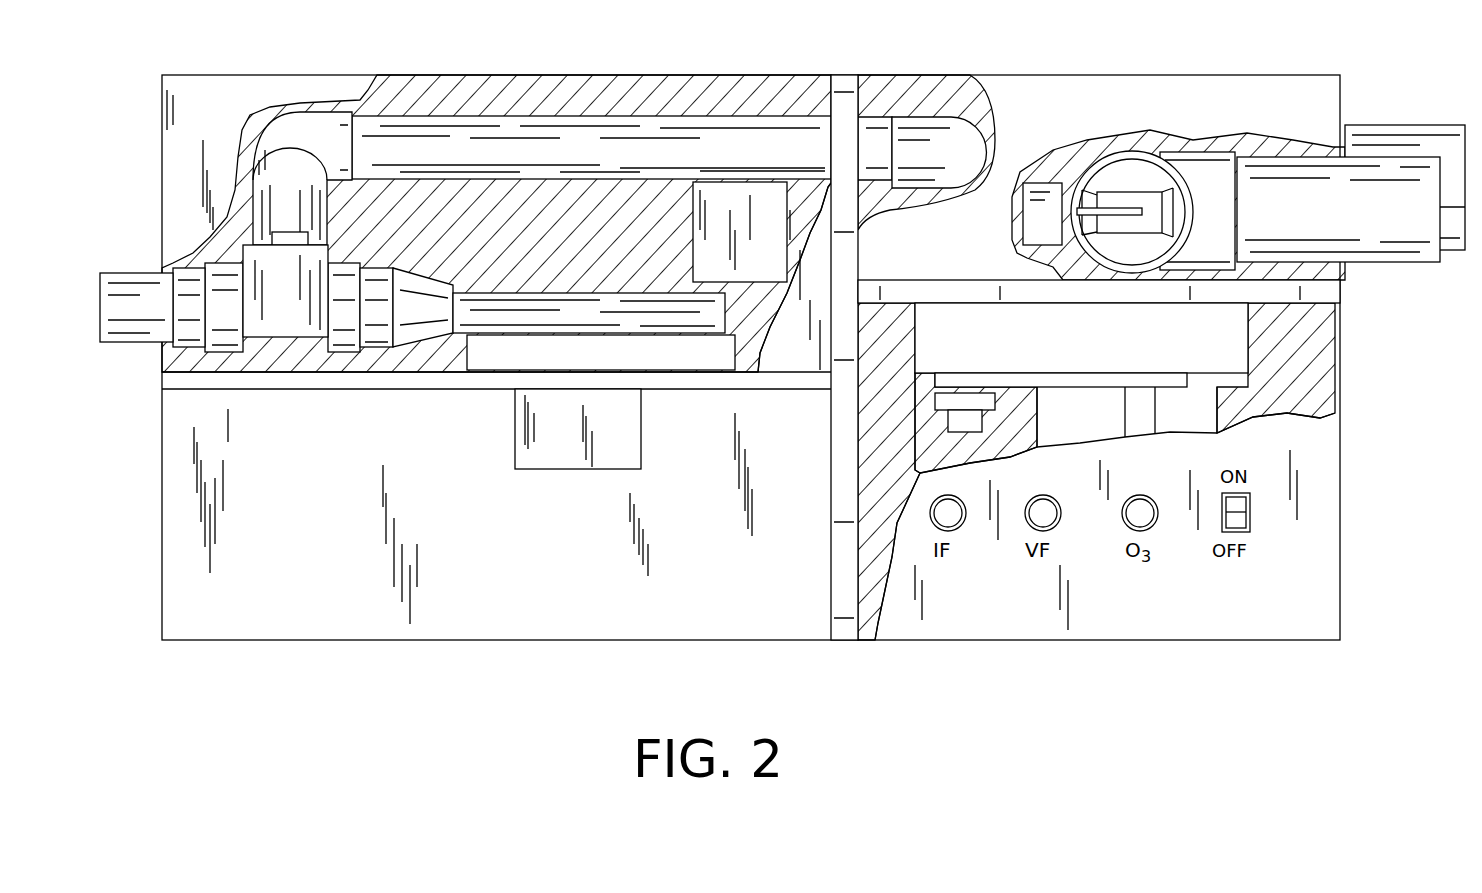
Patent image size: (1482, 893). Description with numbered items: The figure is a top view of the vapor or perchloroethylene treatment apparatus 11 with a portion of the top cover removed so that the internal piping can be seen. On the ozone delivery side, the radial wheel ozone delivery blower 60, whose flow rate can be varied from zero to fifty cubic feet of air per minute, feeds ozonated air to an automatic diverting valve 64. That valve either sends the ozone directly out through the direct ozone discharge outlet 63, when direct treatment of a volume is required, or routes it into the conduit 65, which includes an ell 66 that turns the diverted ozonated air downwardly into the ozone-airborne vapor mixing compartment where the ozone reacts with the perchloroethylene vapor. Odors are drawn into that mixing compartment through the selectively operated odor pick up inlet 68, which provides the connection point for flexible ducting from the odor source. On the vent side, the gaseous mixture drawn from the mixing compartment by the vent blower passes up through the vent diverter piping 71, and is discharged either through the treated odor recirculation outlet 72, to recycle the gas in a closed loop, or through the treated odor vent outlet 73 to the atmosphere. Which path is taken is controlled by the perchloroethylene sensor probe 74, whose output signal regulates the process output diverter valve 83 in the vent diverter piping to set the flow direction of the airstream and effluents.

The vapor or perchloroethylene treatment apparatus 11 is at (150, 402).
The radial wheel ozone delivery blower 60 is at (578, 307).
The direct ozone discharge outlet 63 is at (130, 290).
The automatic diverting valve 64 is at (282, 315).
The conduit 65 is at (460, 133).
The ell 66 is at (932, 140).
The odor pick up inlet 68 is at (1388, 140).
The vent diverter piping 71 is at (1115, 157).
The treated odor recirculation outlet 72 is at (1382, 243).
The treated odor vent outlet 73 is at (1170, 187).
The perchloroethylene sensor probe 74 is at (1040, 200).
The process output diverter valve 83 is at (1127, 222).